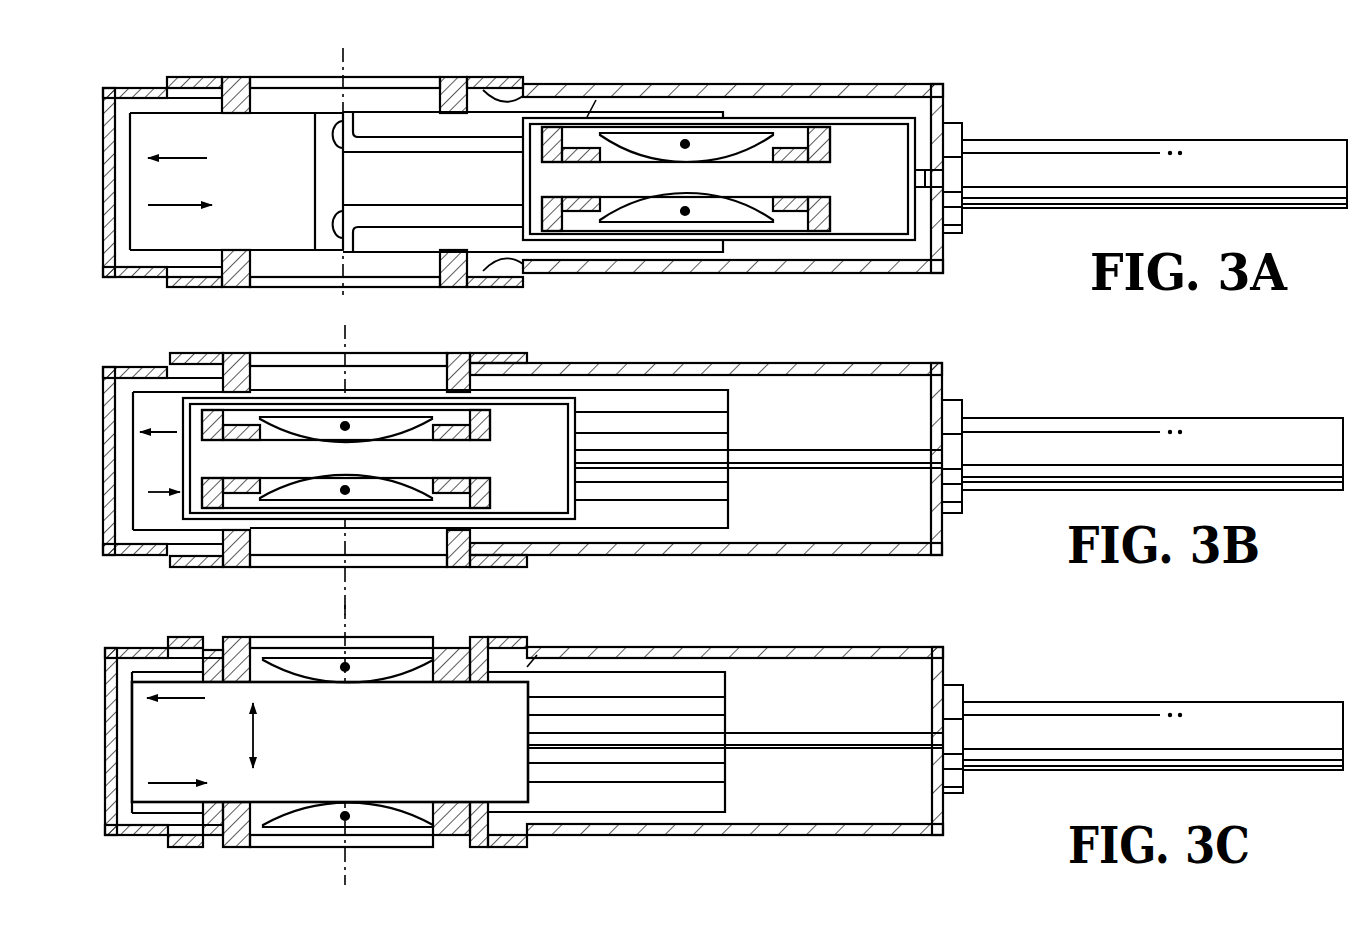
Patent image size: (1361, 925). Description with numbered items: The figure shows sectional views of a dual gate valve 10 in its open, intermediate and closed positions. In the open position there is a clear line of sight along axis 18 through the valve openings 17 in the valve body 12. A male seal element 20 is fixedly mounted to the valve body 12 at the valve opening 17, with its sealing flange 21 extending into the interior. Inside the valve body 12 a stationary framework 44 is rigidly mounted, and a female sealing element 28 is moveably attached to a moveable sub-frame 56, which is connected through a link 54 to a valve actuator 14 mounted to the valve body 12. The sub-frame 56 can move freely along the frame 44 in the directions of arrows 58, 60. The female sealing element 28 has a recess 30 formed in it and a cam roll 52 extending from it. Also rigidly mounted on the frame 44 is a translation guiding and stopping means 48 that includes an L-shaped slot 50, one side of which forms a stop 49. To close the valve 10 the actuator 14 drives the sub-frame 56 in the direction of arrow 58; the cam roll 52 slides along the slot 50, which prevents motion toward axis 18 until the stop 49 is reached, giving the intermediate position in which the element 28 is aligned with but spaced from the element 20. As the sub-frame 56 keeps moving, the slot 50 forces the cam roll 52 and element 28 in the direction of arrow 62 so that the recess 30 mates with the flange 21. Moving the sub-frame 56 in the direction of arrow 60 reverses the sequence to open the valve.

In FIG. 3A, the dual gate valve 10 is at (725, 172).
In FIG. 3B, the dual gate valve 10 is at (691, 464).
In FIG. 3C, the dual gate valve 10 is at (724, 740).
In FIG. 3A, the valve body 12 is at (862, 84).
In FIG. 3B, the valve body 12 is at (863, 363).
In FIG. 3C, the valve body 12 is at (853, 647).
In FIG. 3A, the valve actuator 14 is at (1215, 140).
In FIG. 3B, the valve actuator 14 is at (1247, 418).
In FIG. 3C, the valve actuator 14 is at (1250, 702).
In FIG. 3A, the valve openings 17 is at (293, 60).
In FIG. 3A, the axis 18 is at (345, 66).
In FIG. 3B, the axis 18 is at (347, 350).
In FIG. 3C, the axis 18 is at (347, 627).
In FIG. 3A, the male seal element 20 is at (455, 75).
In FIG. 3B, the male seal element 20 is at (462, 353).
In FIG. 3C, the male seal element 20 is at (213, 637).
In FIG. 3A, the sealing flange 21 is at (525, 92).
In FIG. 3A, the female sealing element 28 is at (719, 170).
In FIG. 3B, the female sealing element 28 is at (379, 458).
In FIG. 3C, the female sealing element 28 is at (330, 742).
In FIG. 3A, the recess 30 is at (800, 142).
In FIG. 3A, the stationary framework 44 is at (197, 198).
In FIG. 3B, the stationary framework 44 is at (177, 483).
In FIG. 3C, the stationary framework 44 is at (895, 708).
In FIG. 3A, the translation guiding and stopping means 48 is at (343, 180).
In FIG. 3A, the stop 49 is at (336, 133).
In FIG. 3A, the L-shaped slot 50 is at (400, 145).
In FIG. 3B, the L-shaped slot 50 is at (700, 493).
In FIG. 3C, the L-shaped slot 50 is at (710, 775).
In FIG. 3A, the cam roll 52 is at (685, 144).
In FIG. 3B, the cam roll 52 is at (345, 490).
In FIG. 3C, the cam roll 52 is at (345, 816).
In FIG. 3A, the link 54 is at (950, 234).
In FIG. 3B, the link 54 is at (858, 450).
In FIG. 3C, the link 54 is at (833, 750).
In FIG. 3A, the sub-frame 56 is at (587, 117).
In FIG. 3B, the sub-frame 56 is at (542, 413).
In FIG. 3C, the sub-frame 56 is at (527, 667).
In FIG. 3A, the arrow 58 is at (170, 158).
In FIG. 3B, the arrow 58 is at (155, 432).
In FIG. 3C, the arrow 58 is at (185, 700).
In FIG. 3A, the arrow 60 is at (190, 205).
In FIG. 3B, the arrow 60 is at (150, 496).
In FIG. 3C, the arrow 60 is at (170, 783).
In FIG. 3C, the arrow 62 is at (258, 735).